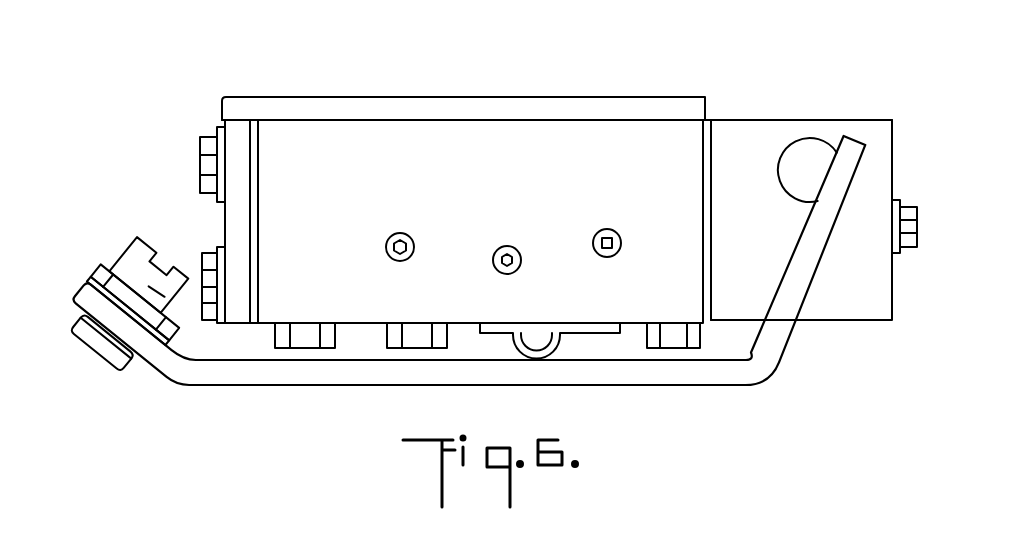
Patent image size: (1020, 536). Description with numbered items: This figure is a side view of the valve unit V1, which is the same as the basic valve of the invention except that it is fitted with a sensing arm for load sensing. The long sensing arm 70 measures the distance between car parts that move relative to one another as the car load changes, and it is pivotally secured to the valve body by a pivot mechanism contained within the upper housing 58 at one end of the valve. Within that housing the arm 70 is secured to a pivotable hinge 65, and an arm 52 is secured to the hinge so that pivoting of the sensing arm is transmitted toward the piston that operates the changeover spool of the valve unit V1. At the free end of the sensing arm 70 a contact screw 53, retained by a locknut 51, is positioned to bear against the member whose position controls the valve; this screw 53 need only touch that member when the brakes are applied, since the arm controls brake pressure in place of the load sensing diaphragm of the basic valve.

The valve unit V1 is at (540, 92).
The locknut 51 is at (108, 270).
The arm 52 is at (77, 292).
The contact screw 53 is at (120, 372).
The upper housing 58 is at (883, 125).
The hinge 65 is at (803, 147).
The sensing arm 70 is at (270, 390).